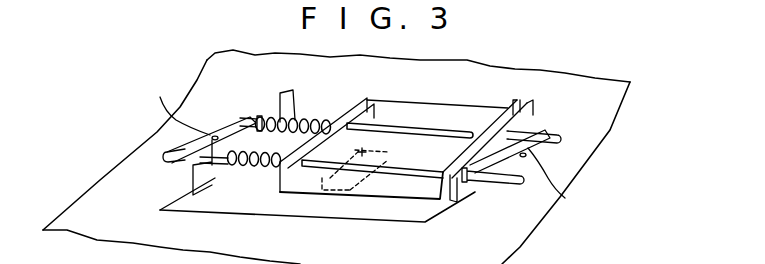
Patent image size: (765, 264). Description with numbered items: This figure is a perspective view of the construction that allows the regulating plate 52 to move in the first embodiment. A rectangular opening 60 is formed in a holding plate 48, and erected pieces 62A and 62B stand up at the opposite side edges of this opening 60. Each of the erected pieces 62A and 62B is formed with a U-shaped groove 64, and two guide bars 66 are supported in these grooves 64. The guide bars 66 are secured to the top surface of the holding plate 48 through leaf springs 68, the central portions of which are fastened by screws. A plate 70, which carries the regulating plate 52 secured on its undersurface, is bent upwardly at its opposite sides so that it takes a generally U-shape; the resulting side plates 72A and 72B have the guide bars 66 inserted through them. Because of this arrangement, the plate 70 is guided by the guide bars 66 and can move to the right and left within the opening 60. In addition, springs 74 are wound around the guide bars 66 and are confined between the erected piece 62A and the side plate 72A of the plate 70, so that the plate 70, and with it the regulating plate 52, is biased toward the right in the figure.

The holding plate 48 is at (600, 107).
The regulating plate 52 is at (373, 135).
The rectangular opening 60 is at (285, 210).
The erected piece 62A is at (192, 180).
The erected piece 62B is at (527, 148).
The U-shaped groove 64 is at (260, 114).
The guide bar 66 is at (407, 140).
The leaf spring 68 is at (593, 203).
The plate 70 is at (368, 192).
The side plate 72A is at (275, 178).
The side plate 72B is at (433, 190).
The spring 74 is at (305, 117).